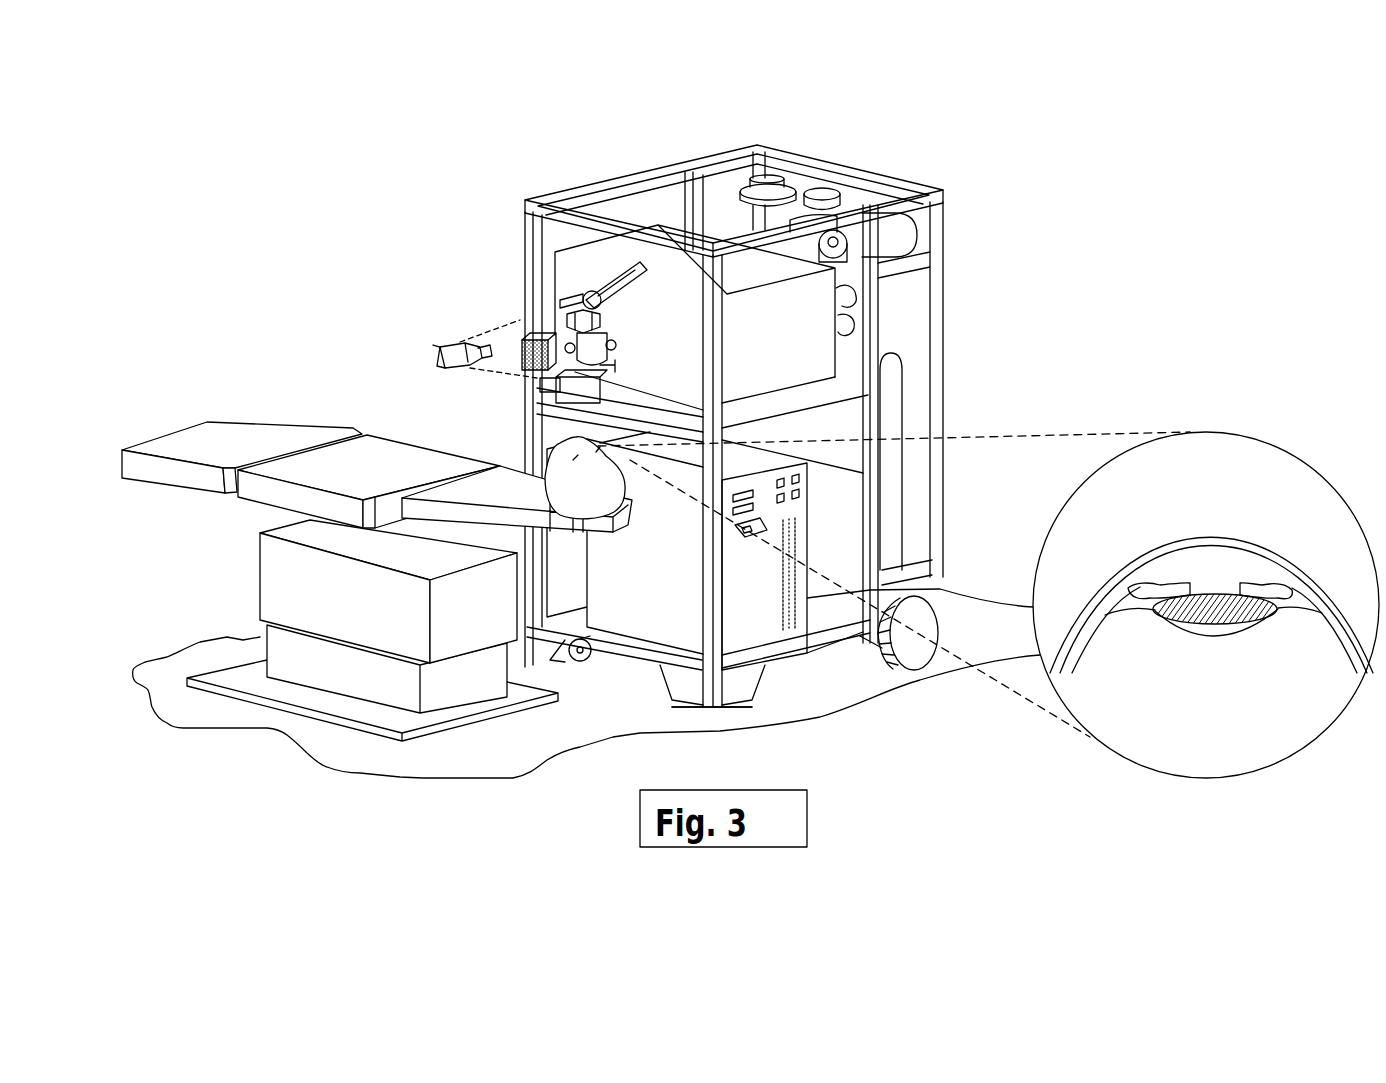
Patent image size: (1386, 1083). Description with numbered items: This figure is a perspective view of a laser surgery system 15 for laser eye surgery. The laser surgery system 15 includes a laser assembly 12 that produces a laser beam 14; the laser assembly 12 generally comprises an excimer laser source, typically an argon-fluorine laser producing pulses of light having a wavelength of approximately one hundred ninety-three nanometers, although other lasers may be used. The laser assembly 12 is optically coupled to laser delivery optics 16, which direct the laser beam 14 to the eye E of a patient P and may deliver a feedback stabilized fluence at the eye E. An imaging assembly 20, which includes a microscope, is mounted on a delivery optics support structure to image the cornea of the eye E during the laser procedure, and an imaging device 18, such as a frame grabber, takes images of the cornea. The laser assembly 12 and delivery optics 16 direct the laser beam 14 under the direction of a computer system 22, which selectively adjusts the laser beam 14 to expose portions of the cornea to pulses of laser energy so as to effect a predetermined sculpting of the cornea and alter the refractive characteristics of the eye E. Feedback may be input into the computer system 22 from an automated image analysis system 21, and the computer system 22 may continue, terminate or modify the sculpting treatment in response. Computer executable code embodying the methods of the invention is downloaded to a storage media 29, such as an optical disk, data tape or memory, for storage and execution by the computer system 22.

The laser assembly 12 is at (796, 403).
The laser beam 14 is at (505, 323).
The laser surgery system 15 is at (290, 240).
The laser delivery optics 16 is at (540, 388).
The imaging device 18 is at (617, 190).
The imaging assembly 20 is at (605, 315).
The automated image analysis system 21 is at (533, 333).
The computer system 22 is at (808, 662).
The storage media 29 is at (740, 532).
The patient P is at (628, 480).
The eye E is at (1231, 435).